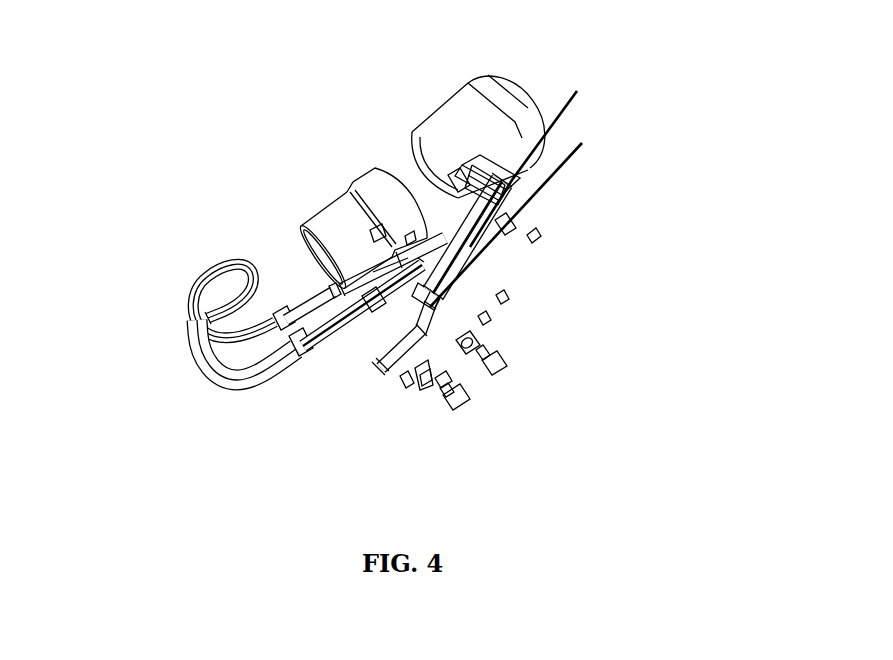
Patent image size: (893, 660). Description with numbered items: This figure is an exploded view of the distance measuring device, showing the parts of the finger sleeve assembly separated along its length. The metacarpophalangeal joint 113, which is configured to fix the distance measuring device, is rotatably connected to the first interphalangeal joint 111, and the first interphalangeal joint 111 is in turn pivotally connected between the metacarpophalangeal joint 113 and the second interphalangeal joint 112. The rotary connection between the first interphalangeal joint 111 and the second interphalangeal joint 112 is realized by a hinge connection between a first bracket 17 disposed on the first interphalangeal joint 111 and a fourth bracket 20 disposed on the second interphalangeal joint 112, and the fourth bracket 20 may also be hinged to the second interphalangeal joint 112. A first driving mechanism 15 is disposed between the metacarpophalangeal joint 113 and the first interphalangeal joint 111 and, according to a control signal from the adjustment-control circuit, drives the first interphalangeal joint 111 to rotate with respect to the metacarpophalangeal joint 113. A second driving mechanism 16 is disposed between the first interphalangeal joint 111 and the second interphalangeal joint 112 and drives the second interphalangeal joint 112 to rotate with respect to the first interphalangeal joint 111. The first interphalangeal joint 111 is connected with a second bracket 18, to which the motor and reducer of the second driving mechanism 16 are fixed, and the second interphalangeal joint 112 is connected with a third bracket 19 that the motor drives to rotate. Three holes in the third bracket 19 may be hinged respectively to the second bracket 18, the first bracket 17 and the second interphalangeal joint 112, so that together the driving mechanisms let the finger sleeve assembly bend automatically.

The first driving mechanism 15 is at (522, 444).
The second driving mechanism 16 is at (552, 400).
The first bracket 17 is at (256, 338).
The second bracket 18 is at (293, 369).
The third bracket 19 is at (570, 221).
The fourth bracket 20 is at (564, 191).
The first interphalangeal joint 111 is at (283, 213).
The second interphalangeal joint 112 is at (413, 106).
The metacarpophalangeal joint 113 is at (266, 275).